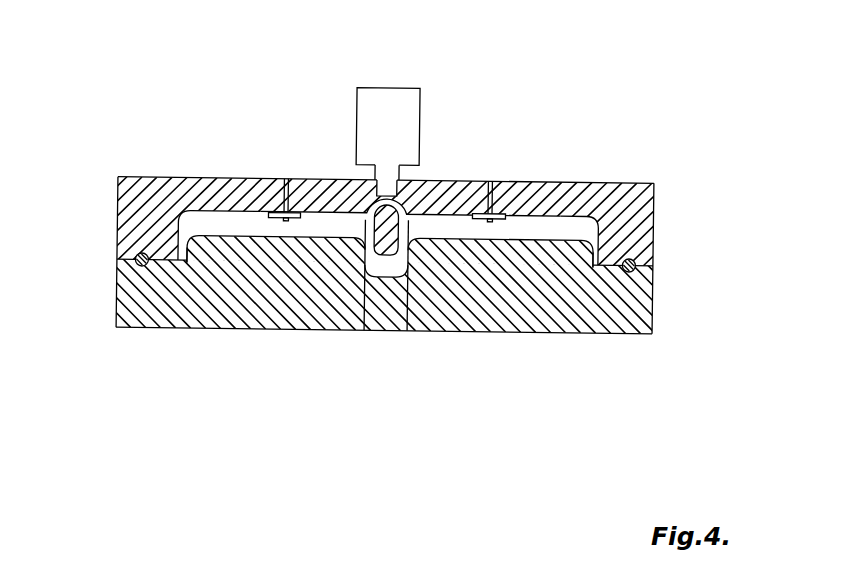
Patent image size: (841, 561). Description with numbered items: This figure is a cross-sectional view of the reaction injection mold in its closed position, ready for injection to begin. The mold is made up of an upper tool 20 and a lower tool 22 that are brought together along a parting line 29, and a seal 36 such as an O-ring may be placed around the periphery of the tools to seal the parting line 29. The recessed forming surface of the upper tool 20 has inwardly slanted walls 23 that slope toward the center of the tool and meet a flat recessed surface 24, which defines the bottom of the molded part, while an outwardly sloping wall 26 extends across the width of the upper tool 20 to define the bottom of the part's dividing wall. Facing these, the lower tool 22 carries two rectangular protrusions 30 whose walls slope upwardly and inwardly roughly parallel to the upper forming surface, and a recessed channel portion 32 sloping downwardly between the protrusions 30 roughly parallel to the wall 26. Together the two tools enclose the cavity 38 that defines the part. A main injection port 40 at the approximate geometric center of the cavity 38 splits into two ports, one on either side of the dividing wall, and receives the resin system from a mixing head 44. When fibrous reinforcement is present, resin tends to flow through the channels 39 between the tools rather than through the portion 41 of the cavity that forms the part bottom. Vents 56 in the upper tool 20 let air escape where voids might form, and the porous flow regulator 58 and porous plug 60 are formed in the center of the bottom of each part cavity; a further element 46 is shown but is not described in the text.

The upper tool 20 is at (634, 207).
The lower tool 22 is at (637, 304).
The inwardly slanted walls 23 is at (182, 213).
The flat recessed surface 24 is at (635, 203).
The outwardly sloping wall 26 is at (413, 255).
The parting line 29 is at (136, 260).
The rectangular protrusions 30 is at (226, 252).
The recessed channel portion 32 is at (383, 278).
The seal 36 is at (124, 263).
The cavity 38 is at (581, 232).
The channels 39 is at (189, 256).
The main injection port 40 is at (440, 180).
The portion of the cavity 41 is at (243, 226).
The mixing head 44 is at (368, 105).
The nozzle stem 46 is at (385, 192).
The vents 56 is at (282, 212).
The porous flow regulator 58 is at (287, 213).
The porous plug 60 is at (282, 222).